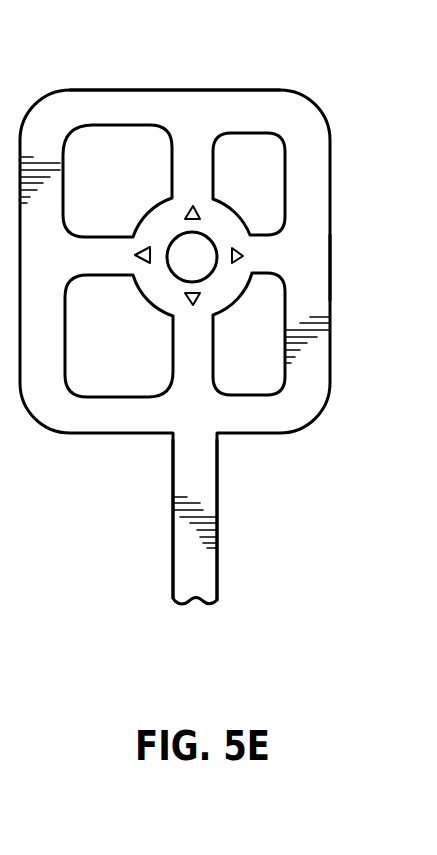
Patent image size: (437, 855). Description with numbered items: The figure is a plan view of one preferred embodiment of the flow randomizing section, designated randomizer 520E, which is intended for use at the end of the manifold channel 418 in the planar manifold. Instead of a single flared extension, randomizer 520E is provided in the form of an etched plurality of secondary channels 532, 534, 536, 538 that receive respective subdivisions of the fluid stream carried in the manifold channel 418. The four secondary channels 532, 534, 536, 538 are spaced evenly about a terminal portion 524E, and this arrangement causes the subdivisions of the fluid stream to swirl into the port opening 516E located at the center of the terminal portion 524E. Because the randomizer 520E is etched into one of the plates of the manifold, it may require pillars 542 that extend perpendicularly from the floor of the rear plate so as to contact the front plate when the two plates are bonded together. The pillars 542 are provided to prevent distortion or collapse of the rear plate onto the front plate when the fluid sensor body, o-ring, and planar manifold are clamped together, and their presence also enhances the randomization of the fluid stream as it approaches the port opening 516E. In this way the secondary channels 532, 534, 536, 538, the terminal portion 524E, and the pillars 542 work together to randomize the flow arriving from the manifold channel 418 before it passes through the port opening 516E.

The secondary channel 536 is at (190, 113).
The port opening 516E is at (210, 238).
The secondary channel 534 is at (295, 253).
The terminal portion 524E is at (142, 221).
The secondary channel 538 is at (110, 250).
The pillar 542 is at (233, 259).
The secondary channel 532 is at (188, 347).
The randomizer 520E is at (27, 404).
The manifold channel 418 is at (218, 528).